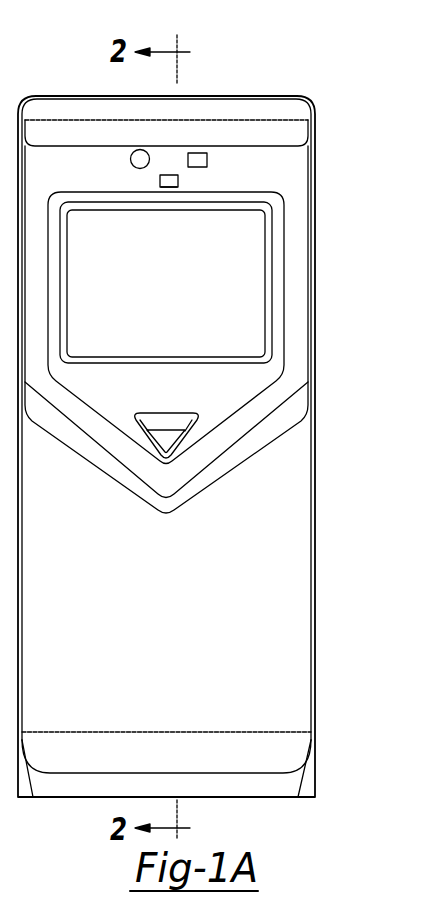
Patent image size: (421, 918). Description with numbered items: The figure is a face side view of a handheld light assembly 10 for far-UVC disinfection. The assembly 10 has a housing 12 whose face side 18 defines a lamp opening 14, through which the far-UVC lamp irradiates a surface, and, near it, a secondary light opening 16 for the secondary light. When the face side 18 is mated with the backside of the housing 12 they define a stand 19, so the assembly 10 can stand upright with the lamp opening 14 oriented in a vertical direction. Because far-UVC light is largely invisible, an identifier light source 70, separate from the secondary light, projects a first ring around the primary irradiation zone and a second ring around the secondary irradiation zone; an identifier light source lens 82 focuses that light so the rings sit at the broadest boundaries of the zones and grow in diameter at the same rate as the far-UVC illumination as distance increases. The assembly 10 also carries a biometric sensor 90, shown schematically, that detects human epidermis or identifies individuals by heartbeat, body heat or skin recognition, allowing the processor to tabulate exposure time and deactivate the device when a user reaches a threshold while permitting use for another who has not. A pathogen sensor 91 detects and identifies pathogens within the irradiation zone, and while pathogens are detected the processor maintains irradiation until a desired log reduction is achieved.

The handheld light assembly 10 is at (309, 99).
The housing 12 is at (298, 472).
The lamp opening 14 is at (176, 291).
The secondary light opening 16 is at (160, 435).
The face side 18 is at (176, 627).
The stand 19 is at (271, 805).
The identifier light source 70 is at (160, 178).
The identifier light source lens 82 is at (168, 196).
The biometric sensor 90 is at (130, 159).
The pathogen sensor 91 is at (208, 158).